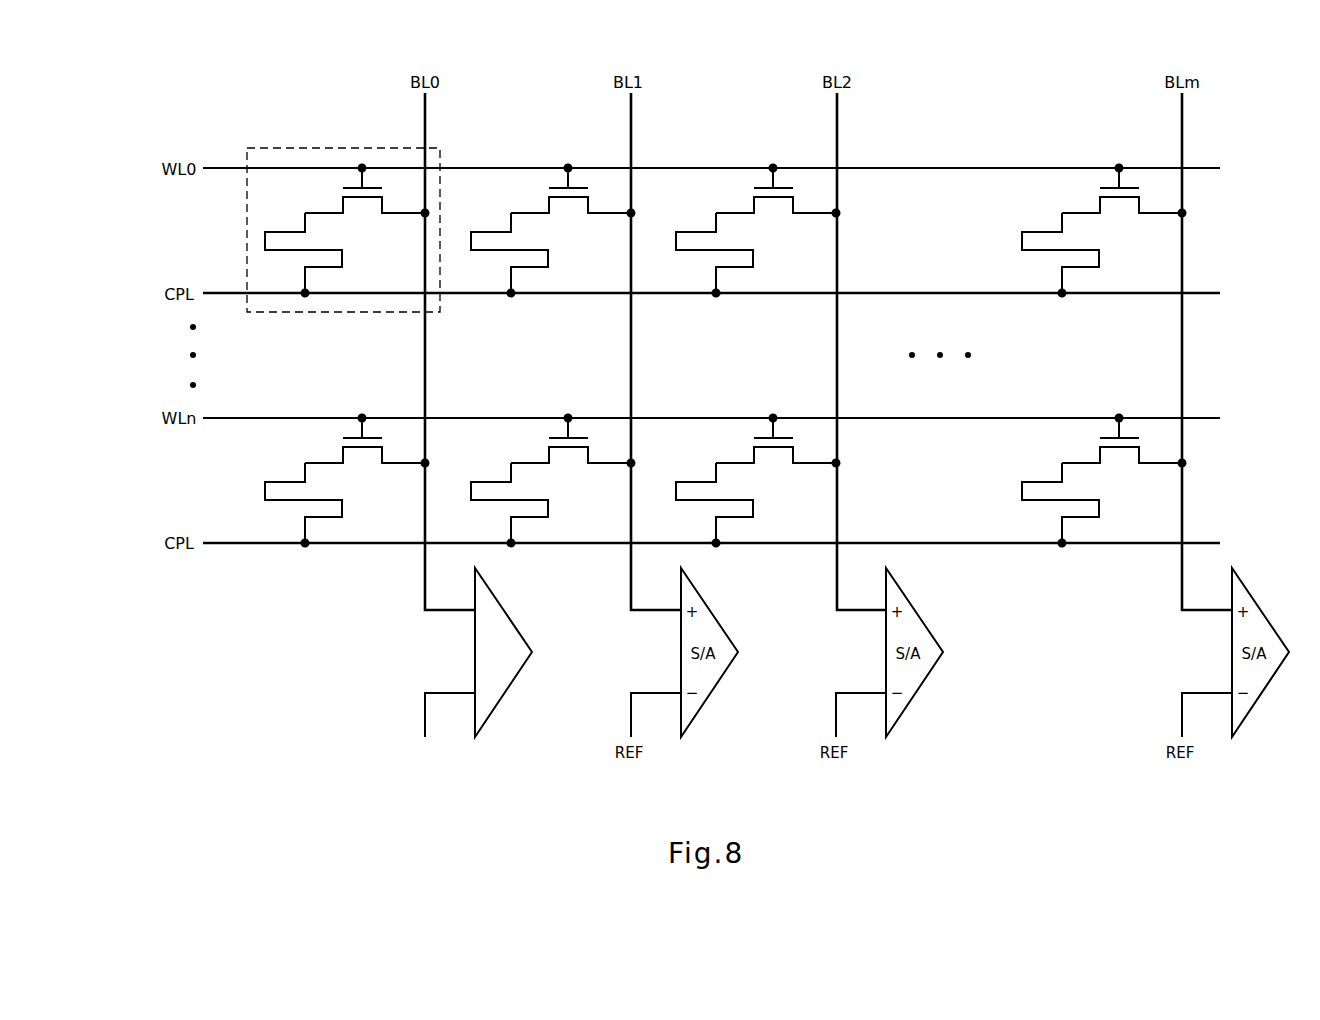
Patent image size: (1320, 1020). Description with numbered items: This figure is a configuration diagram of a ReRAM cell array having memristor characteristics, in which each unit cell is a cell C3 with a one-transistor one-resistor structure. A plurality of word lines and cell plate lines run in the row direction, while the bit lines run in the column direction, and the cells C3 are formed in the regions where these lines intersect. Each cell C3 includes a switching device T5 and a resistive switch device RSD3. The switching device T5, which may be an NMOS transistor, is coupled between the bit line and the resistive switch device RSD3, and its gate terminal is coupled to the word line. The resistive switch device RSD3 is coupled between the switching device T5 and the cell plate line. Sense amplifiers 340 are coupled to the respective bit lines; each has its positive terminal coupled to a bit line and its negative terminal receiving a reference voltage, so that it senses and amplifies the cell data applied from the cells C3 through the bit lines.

The cell C3 is at (343, 199).
The switching device T5 is at (367, 199).
The resistive switch device RSD3 is at (331, 255).
The sense amplifier 340 is at (515, 620).